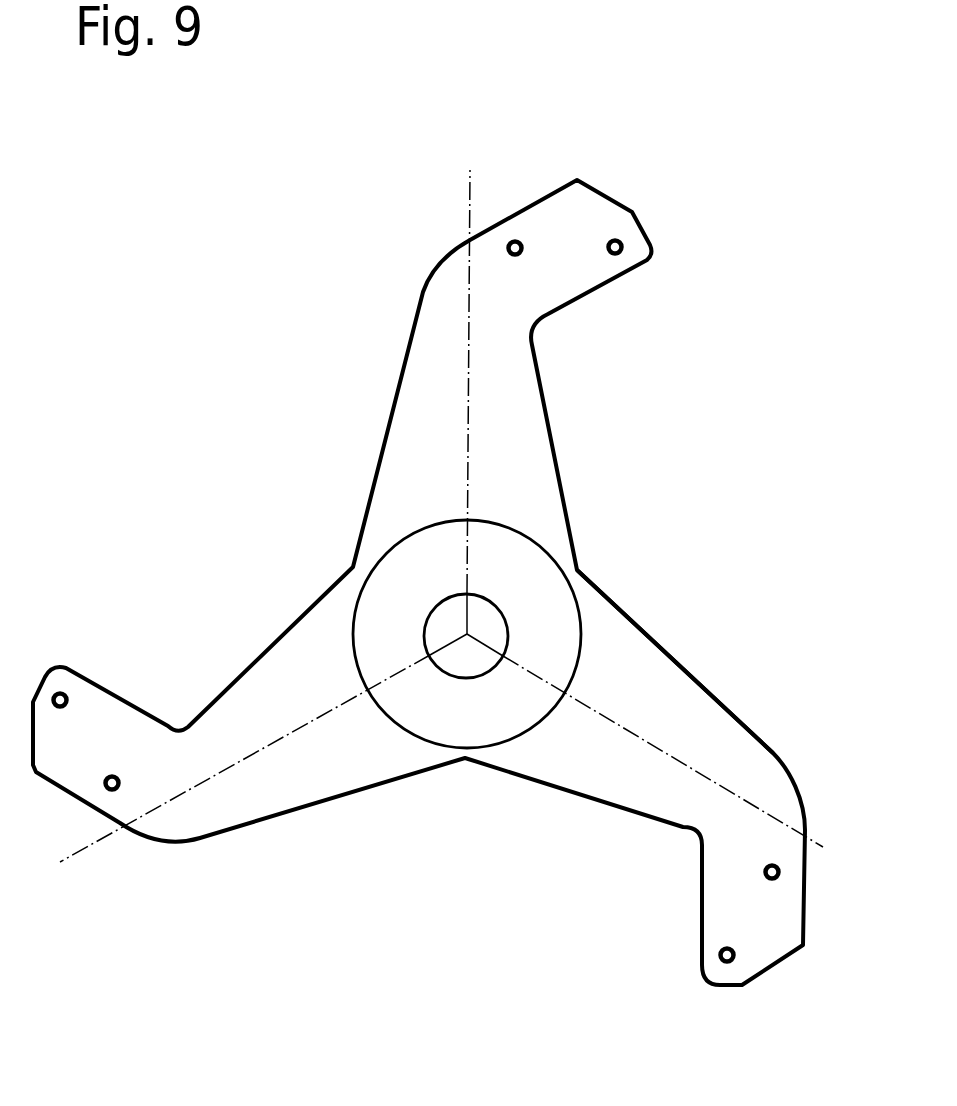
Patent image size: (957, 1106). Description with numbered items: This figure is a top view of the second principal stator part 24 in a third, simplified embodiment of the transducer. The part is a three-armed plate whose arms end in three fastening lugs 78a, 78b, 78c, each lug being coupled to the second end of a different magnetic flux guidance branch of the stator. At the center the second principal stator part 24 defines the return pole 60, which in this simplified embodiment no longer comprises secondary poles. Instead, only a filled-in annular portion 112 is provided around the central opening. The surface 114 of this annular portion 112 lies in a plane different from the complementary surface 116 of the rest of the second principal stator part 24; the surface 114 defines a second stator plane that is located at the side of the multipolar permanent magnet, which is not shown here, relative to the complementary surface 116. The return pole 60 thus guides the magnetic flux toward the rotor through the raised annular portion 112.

The second principal stator part 24 is at (520, 447).
The return pole 60 is at (622, 662).
The fastening lug 78a is at (102, 732).
The fastening lug 78b is at (767, 933).
The fastening lug 78c is at (597, 238).
The filled-in annular portion 112 is at (545, 640).
The surface of annular portion 114 is at (426, 402).
The complementary surface 116 is at (263, 748).